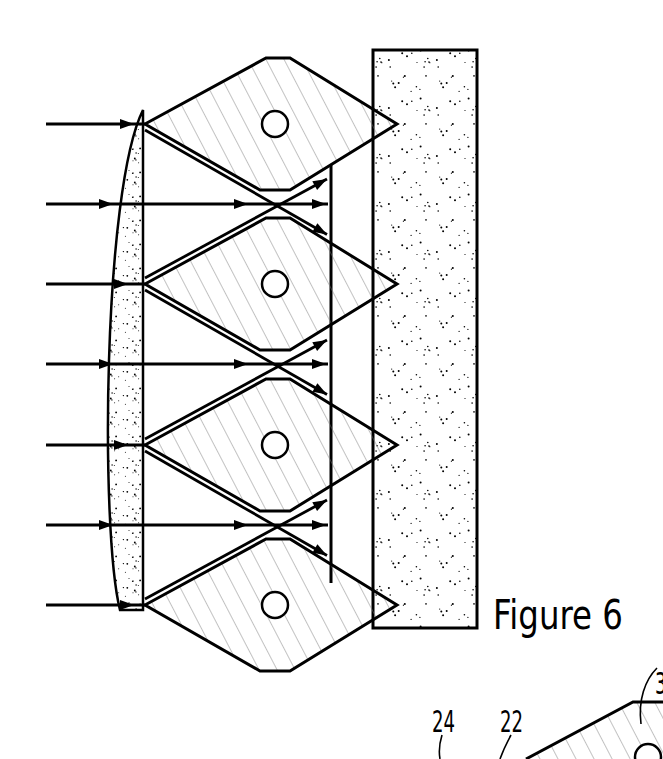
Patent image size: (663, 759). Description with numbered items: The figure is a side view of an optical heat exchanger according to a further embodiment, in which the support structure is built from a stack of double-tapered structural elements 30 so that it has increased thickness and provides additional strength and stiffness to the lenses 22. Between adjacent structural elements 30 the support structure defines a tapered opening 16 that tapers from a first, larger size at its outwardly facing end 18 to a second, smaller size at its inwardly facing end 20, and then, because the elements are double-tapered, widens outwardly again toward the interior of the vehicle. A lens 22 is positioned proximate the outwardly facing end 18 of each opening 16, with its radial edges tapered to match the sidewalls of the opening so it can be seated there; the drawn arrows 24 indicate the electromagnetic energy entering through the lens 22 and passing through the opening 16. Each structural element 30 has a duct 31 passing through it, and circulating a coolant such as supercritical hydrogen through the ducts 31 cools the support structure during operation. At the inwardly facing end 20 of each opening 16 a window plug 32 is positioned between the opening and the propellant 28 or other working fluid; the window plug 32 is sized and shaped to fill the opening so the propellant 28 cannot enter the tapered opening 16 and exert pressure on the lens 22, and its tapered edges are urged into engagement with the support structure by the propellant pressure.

The tapered opening 16 is at (173, 553).
The outwardly facing end 18 is at (146, 508).
The inwardly facing end 20 is at (257, 672).
The lens 22 is at (133, 147).
The incident light rays 24 is at (78, 122).
The propellant 28 is at (455, 148).
The double-tapered structural element 30 is at (275, 78).
The duct 31 is at (275, 284).
The window plug 32 is at (355, 188).